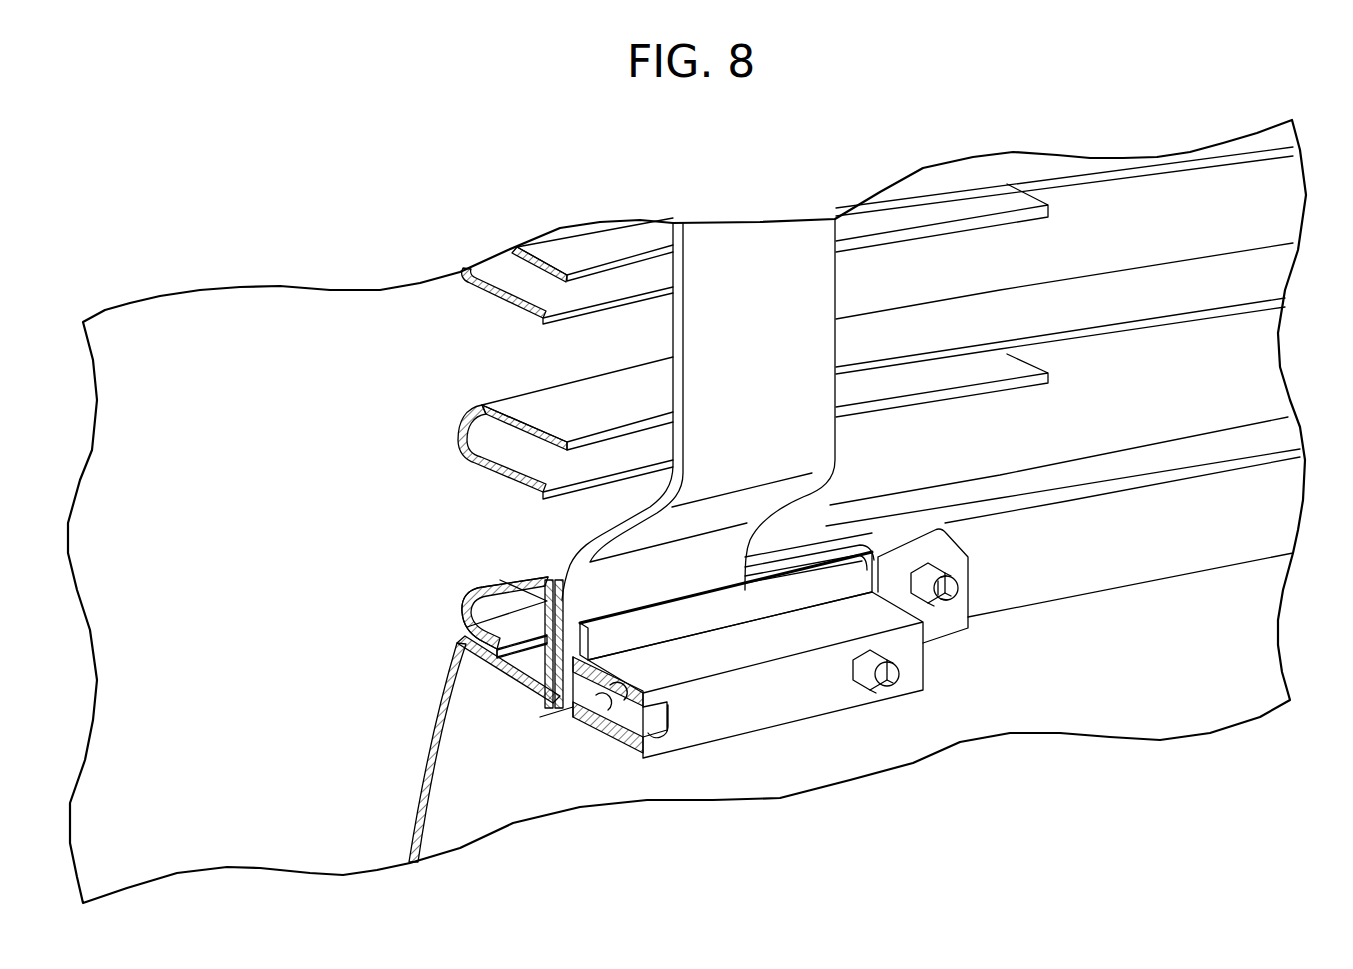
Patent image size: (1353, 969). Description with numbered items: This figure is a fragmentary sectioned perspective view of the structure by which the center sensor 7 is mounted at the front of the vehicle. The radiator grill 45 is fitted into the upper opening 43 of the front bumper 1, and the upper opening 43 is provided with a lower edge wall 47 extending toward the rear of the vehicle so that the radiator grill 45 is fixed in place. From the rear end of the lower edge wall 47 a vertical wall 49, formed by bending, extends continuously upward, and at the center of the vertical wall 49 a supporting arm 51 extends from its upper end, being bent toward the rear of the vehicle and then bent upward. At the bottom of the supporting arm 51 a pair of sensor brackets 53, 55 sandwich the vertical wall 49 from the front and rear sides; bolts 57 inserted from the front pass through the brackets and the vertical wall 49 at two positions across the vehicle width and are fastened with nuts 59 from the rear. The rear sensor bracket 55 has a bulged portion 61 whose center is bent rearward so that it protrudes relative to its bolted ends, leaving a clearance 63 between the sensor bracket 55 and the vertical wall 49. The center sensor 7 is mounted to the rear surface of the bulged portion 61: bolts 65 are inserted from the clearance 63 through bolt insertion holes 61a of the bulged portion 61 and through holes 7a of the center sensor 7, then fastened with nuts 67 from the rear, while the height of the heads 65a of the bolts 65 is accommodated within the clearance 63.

The front bumper 1 is at (1117, 738).
The center sensor 7 is at (750, 707).
The through holes 7a is at (626, 716).
The upper opening 43 is at (577, 350).
The radiator grill 45 is at (462, 422).
The lower edge wall 47 is at (457, 643).
The vertical wall 49 is at (548, 700).
The supporting arm 51 is at (750, 272).
The sensor bracket 53 is at (463, 597).
The sensor bracket 55 is at (935, 545).
The bolts 57 is at (951, 590).
The nuts 59 is at (952, 592).
The bulged portion 61 is at (780, 597).
The bolt insertion holes 61a is at (590, 735).
The clearance 63 is at (843, 553).
The bolts 65 is at (885, 677).
The heads 65a is at (557, 708).
The nuts 67 is at (870, 692).